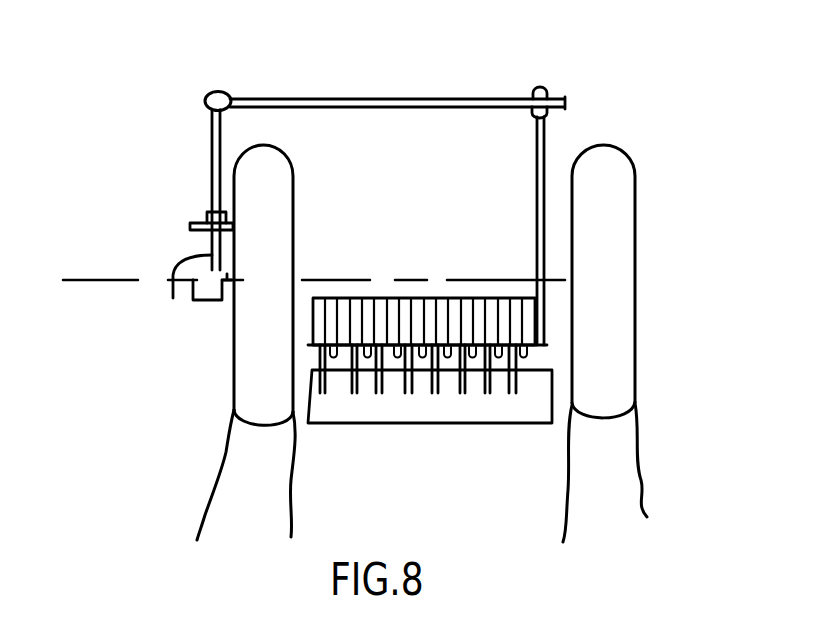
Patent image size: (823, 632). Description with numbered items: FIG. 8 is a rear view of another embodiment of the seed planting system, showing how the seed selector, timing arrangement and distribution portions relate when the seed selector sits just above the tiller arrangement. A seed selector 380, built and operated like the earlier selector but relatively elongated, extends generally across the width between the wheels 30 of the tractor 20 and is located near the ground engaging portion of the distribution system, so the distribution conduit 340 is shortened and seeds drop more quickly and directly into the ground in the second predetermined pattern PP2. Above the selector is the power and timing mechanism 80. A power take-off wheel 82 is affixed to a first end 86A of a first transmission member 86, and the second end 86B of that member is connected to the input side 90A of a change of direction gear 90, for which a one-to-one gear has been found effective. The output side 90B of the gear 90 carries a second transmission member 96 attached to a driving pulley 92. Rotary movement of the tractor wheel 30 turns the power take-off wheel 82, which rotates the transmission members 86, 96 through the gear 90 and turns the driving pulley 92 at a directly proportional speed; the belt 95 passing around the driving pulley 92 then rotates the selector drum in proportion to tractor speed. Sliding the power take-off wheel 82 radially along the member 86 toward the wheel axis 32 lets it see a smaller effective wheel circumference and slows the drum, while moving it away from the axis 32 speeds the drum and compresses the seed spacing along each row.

The tractor 20 is at (640, 137).
The tractor wheel 30 is at (637, 183).
The wheel axis 32 is at (645, 280).
The power and timing mechanism 80 is at (199, 102).
The power take-off wheel 82 is at (203, 227).
The first transmission member 86 is at (207, 188).
The first end of first transmission member 86A is at (162, 293).
The second end of first transmission member 86B is at (208, 147).
The change of direction gear 90 is at (217, 93).
The input side of change of direction gear 90A is at (210, 117).
The output side of change of direction gear 90B is at (240, 97).
The driving pulley 92 is at (548, 92).
The belt 95 is at (537, 160).
The second transmission member 96 is at (430, 97).
The distribution conduit 340 is at (327, 383).
The seed selector 380 is at (528, 297).
The second predetermined pattern PP2 is at (503, 377).